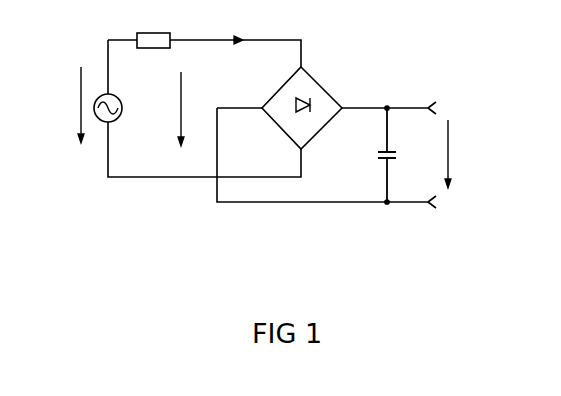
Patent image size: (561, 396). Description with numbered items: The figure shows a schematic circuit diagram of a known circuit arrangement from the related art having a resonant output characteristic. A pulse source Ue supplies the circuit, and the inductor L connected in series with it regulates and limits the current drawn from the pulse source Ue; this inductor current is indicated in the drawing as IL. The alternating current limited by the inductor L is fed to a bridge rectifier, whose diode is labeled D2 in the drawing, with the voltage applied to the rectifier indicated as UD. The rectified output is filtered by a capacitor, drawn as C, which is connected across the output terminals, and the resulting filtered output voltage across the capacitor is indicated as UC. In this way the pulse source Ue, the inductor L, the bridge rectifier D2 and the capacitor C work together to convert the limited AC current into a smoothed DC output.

The inductor L is at (153, 31).
The inductor current IL is at (237, 27).
The rectifier bridge diode D2 is at (302, 108).
The capacitor C is at (396, 155).
The pulse source Ue is at (86, 105).
The rectifier input voltage UD is at (167, 109).
The capacitor output voltage UC is at (461, 154).